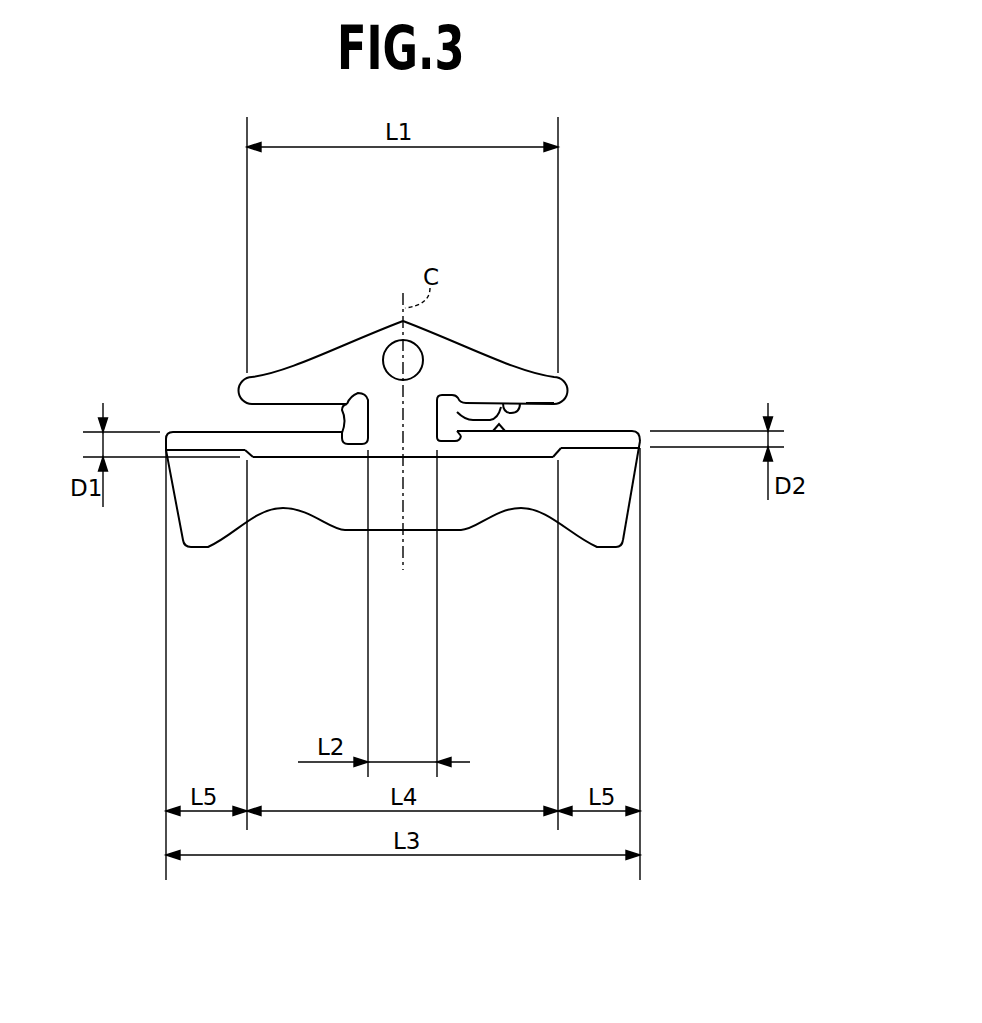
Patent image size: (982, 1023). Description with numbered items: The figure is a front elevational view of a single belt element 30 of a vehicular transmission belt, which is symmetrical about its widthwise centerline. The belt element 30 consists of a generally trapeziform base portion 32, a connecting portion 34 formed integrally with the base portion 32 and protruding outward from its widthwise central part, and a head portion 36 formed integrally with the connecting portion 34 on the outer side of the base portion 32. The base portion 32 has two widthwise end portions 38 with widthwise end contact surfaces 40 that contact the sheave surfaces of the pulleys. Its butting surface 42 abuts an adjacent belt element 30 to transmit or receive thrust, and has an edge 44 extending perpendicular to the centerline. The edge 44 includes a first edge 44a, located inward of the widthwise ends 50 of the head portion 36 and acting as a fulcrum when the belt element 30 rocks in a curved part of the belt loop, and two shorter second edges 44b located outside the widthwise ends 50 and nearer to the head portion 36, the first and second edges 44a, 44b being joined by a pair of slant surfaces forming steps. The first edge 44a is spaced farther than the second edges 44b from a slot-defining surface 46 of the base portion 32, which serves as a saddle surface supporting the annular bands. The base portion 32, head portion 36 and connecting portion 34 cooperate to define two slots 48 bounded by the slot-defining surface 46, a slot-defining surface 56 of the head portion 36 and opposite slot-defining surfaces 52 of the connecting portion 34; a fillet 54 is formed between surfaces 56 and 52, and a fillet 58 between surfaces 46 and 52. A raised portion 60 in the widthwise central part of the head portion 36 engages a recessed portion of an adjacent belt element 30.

The belt element 30 is at (150, 367).
The base portion 32 is at (421, 562).
The connecting portion 34 is at (343, 416).
The head portion 36 is at (324, 342).
The widthwise end portions 38 is at (655, 527).
The widthwise end contact surfaces 40 is at (626, 532).
The butting surface 42 is at (258, 432).
The edge 44 is at (352, 468).
The first edge 44a is at (303, 457).
The second edges 44b is at (200, 450).
The slot-defining surface 46 is at (500, 429).
The slots 48 is at (550, 414).
The widthwise ends 50 is at (572, 386).
The slot-defining surfaces 52 is at (503, 398).
The fillet 54 is at (460, 393).
The slot-defining surface 56 is at (533, 401).
The fillet 58 is at (460, 441).
The raised portion 60 is at (391, 349).